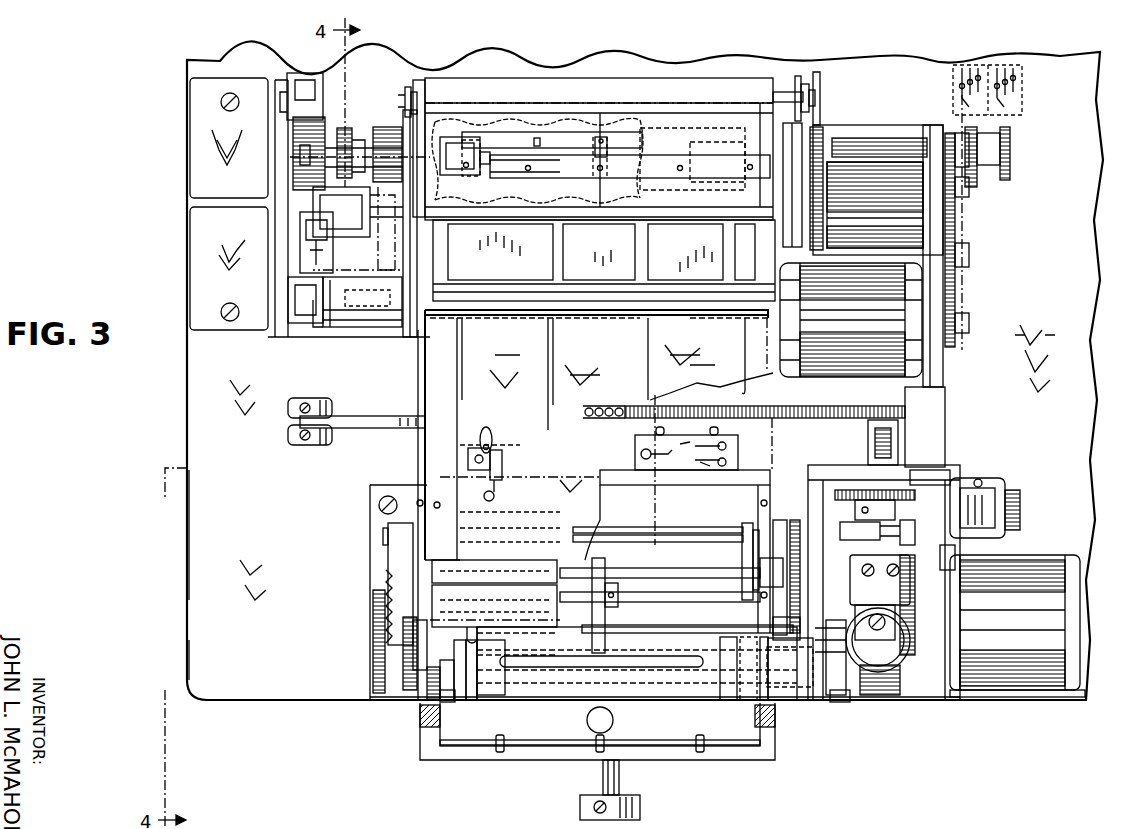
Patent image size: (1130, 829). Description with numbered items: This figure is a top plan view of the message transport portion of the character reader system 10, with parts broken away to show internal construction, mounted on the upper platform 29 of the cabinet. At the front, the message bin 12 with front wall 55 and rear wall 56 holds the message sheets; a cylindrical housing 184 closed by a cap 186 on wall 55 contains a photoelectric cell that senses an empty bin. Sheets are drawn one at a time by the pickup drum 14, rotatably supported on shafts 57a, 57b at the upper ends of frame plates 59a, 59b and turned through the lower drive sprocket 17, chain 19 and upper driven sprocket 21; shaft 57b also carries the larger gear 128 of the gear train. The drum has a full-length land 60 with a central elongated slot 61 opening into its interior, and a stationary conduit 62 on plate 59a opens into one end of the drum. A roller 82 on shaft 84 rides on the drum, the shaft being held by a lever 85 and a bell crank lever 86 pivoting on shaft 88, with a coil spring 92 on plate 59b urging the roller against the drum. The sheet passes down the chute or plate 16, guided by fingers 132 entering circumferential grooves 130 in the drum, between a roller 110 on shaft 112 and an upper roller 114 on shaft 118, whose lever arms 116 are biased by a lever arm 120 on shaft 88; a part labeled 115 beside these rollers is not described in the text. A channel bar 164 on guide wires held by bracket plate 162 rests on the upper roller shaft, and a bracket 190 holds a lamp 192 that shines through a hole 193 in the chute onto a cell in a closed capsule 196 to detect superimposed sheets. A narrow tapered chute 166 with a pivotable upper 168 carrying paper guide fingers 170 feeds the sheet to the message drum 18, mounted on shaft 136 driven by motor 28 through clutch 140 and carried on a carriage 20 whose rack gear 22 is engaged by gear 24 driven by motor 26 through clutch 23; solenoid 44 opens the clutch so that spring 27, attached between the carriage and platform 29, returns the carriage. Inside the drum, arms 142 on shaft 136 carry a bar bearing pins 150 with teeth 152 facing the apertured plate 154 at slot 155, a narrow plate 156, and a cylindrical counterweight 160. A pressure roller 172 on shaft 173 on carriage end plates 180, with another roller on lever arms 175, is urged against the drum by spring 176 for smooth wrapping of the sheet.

The character reader system 10 is at (140, 135).
The message bin 12 is at (778, 742).
The pickup drum 14 is at (628, 668).
The chute 16 is at (425, 360).
The lower drive sprocket 17 is at (373, 592).
The message drum 18 is at (720, 125).
The chain 19 is at (403, 638).
The carriage 20 is at (410, 120).
The upper driven sprocket 21 is at (380, 700).
The rack gear 22 is at (760, 408).
The clutch 23 is at (840, 498).
The gear 24 is at (888, 416).
The motor 26 is at (1020, 558).
The spring 27 is at (390, 420).
The motor 28 is at (850, 365).
The platform 29 is at (188, 570).
The solenoid 44 is at (986, 478).
The front wall 55 is at (732, 760).
The rear wall 56 is at (650, 748).
The shaft 57a is at (790, 672).
The shaft 57b is at (442, 697).
The frame plate 59a is at (712, 672).
The frame plate 59b is at (422, 697).
The land 60 is at (488, 670).
The elongated slot 61 is at (580, 666).
The stationary conduit 62 is at (852, 670).
The roller 82 is at (612, 600).
The shaft 84 is at (680, 626).
The lever 85 is at (798, 505).
The bell crank lever 86 is at (400, 556).
The shaft 88 is at (600, 490).
The coil spring 92 is at (386, 578).
The roller 110 is at (600, 575).
The shaft 112 is at (645, 575).
The upper roller 114 is at (595, 530).
The rod 115 is at (700, 545).
The lever arms 116 is at (747, 523).
The shaft 118 is at (745, 575).
The lever arm 120 is at (755, 540).
The larger gear 128 is at (402, 697).
The circumferential grooves 130 is at (645, 668).
The fingers 132 is at (472, 630).
The shaft 136 is at (520, 120).
The clutch 140 is at (877, 162).
The radially extending arms 142 is at (460, 170).
The radially extending pins 150 is at (575, 145).
The teeth 152 is at (560, 130).
The apertured plate 154 is at (612, 78).
The elongated slot 155 is at (762, 80).
The narrow plate 156 is at (488, 164).
The cylindrical counterweight 160 is at (522, 168).
The bracket plate 162 is at (522, 324).
The channel bar 164 is at (525, 560).
The narrow tapered chute 166 is at (665, 235).
The pivotable upper 168 is at (520, 290).
The paper guide fingers 170 is at (648, 246).
The pressure roller 172 is at (645, 80).
The shaft 173 is at (780, 92).
The lever arms 175 is at (412, 84).
The spring 176 is at (410, 90).
The carriage end plates 180 is at (422, 84).
The cylindrical housing 184 is at (625, 772).
The cap 186 is at (578, 808).
The bracket 190 is at (478, 437).
The lamp 192 is at (497, 450).
The hole 193 is at (494, 494).
The closed capsule 196 is at (633, 456).